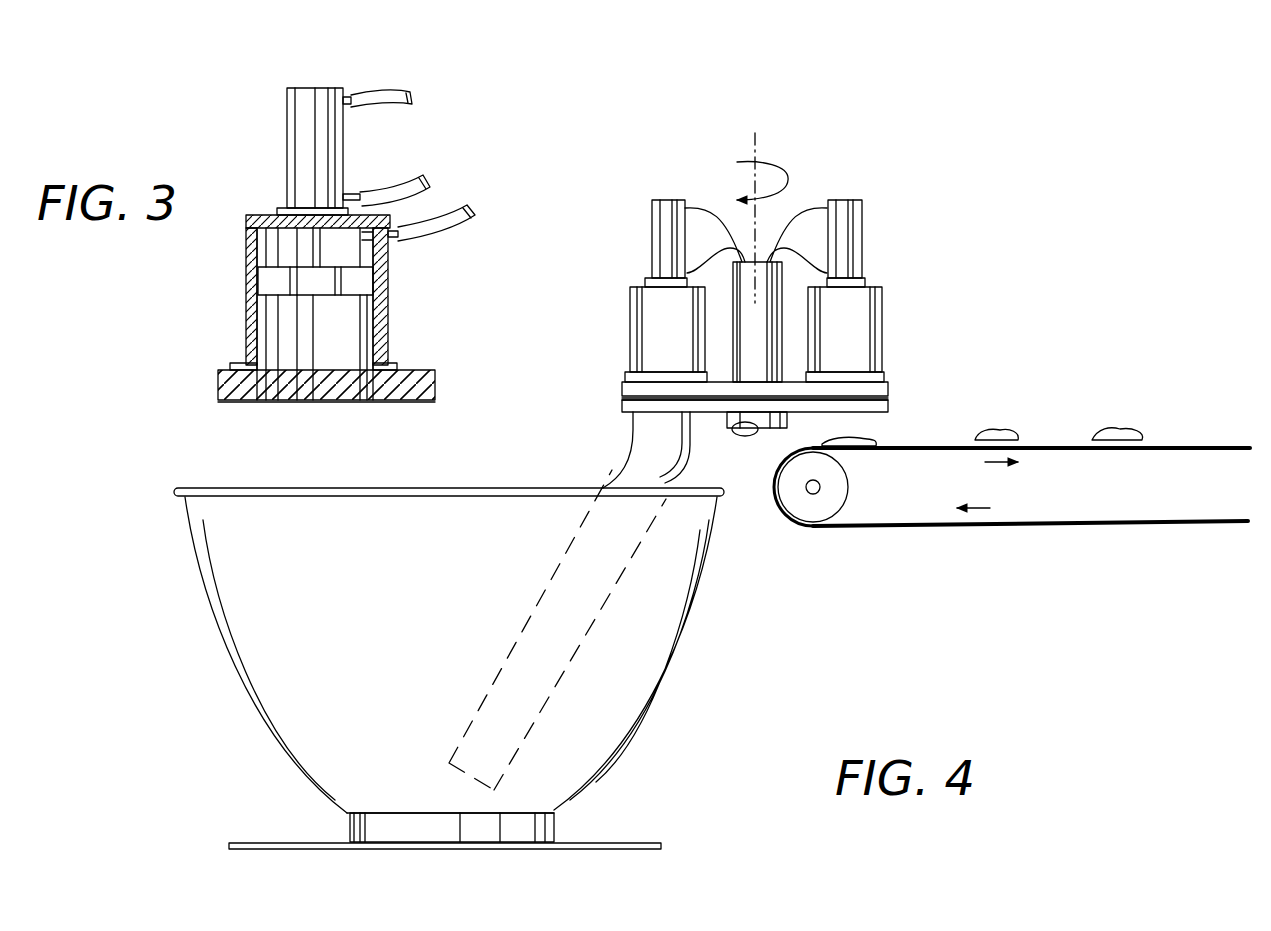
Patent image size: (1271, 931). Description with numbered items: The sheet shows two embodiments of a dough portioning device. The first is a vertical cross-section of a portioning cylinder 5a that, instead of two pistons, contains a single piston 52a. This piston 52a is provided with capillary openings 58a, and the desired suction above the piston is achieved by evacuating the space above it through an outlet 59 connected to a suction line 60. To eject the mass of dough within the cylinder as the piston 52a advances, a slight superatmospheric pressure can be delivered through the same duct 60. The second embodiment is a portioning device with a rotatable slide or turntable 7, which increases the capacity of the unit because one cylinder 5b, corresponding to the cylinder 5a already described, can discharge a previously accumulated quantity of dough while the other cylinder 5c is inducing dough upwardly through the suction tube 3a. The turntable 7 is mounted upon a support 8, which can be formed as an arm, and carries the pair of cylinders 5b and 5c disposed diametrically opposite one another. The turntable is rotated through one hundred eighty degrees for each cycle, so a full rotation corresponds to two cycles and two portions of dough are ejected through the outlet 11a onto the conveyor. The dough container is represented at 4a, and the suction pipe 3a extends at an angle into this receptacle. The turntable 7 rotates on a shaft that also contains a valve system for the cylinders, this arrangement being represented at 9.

In FIG. 3, the cylinder 5a is at (326, 245).
In FIG. 3, the capillary openings 58a is at (290, 297).
In FIG. 3, the piston 52a is at (327, 290).
In FIG. 3, the outlet 59 is at (368, 246).
In FIG. 3, the suction line 60 is at (463, 225).
In FIG. 4, the cylinder 5b is at (624, 290).
In FIG. 4, the cylinder 5c is at (896, 290).
In FIG. 4, the shaft with valve system 9 is at (756, 352).
In FIG. 4, the turntable 7 is at (896, 390).
In FIG. 4, the support 8 is at (896, 408).
In FIG. 4, the outlet 11a is at (818, 418).
In FIG. 4, the suction tube 3a is at (634, 460).
In FIG. 4, the container 4a is at (703, 647).